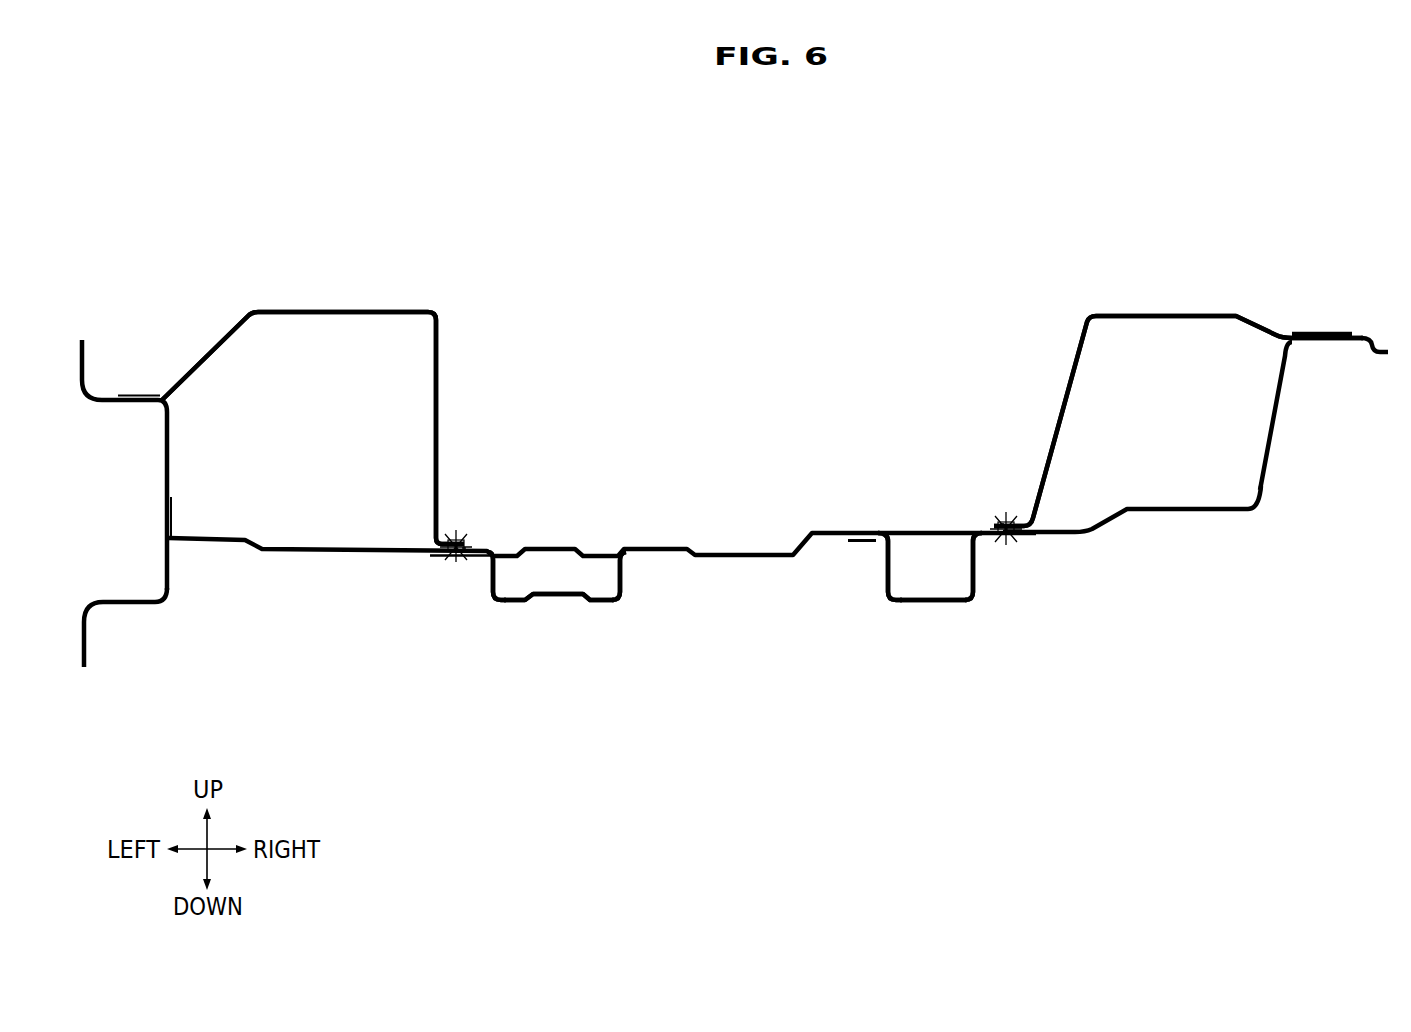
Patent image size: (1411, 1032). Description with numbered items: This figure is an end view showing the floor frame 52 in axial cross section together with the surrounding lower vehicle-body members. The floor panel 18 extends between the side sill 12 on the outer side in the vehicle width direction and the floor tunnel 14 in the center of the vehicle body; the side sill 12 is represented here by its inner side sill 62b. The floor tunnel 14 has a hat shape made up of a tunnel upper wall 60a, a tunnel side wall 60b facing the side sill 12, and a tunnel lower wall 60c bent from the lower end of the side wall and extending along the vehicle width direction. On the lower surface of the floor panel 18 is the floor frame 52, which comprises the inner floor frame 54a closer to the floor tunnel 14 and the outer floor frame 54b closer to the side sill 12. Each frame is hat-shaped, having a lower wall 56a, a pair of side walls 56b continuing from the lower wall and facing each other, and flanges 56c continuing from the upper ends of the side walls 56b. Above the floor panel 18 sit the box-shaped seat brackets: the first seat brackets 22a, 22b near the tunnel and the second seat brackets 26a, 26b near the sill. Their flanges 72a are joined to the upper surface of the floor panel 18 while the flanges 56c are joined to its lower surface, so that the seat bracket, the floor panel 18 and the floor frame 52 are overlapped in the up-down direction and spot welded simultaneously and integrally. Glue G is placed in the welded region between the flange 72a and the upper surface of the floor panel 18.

The side sill 12 is at (107, 363).
The floor tunnel 14 is at (1350, 366).
The floor panel 18 is at (727, 560).
The first seat bracket 22a is at (1180, 303).
The first seat bracket 22b is at (1178, 421).
The second seat bracket 26a is at (357, 303).
The second seat bracket 26b is at (313, 428).
The floor frame 52 is at (706, 678).
The inner floor frame 54a is at (922, 612).
The outer floor frame 54b is at (577, 610).
The lower wall 56a is at (543, 600).
The side wall 56b is at (490, 580).
The flange 56c is at (473, 560).
The tunnel upper wall 60a is at (1376, 340).
The tunnel side wall 60b is at (1275, 433).
The tunnel lower wall 60c is at (1175, 512).
The inner side sill 62b is at (140, 608).
The flange 72a is at (456, 540).
The glue G is at (463, 547).